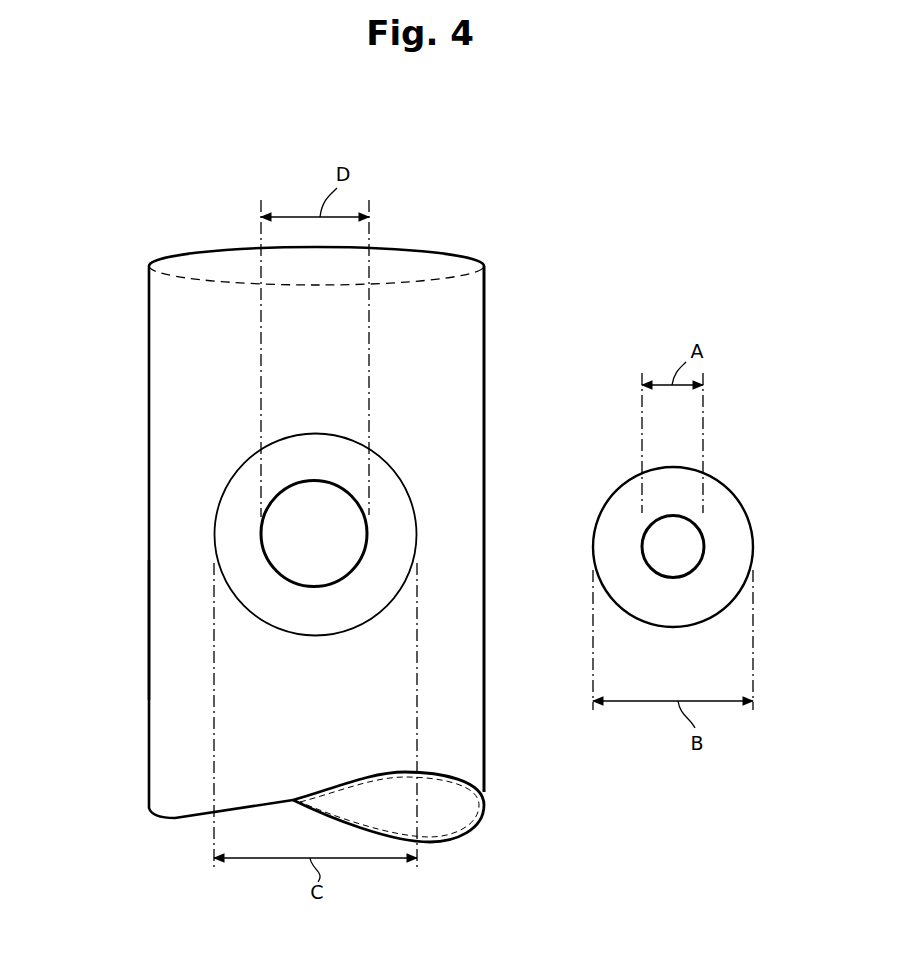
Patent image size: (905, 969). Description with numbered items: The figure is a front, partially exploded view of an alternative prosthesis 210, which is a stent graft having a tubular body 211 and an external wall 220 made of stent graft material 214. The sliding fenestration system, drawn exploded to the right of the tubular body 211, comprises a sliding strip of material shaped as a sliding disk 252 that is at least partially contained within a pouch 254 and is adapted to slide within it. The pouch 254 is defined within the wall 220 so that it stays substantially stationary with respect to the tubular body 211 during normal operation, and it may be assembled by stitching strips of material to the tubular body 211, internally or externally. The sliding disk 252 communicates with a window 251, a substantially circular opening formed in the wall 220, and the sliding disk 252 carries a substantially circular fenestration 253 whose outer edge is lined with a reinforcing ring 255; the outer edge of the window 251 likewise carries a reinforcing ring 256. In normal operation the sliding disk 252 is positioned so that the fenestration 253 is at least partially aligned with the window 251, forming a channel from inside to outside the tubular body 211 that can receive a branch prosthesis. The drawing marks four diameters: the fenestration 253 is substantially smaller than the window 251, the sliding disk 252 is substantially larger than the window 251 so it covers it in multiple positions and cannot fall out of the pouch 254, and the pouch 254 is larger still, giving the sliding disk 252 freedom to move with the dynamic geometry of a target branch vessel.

The prosthesis 210 is at (302, 526).
The tubular body 211 is at (484, 358).
The stent graft material 214 is at (155, 642).
The external wall 220 is at (157, 730).
The window 251 is at (352, 543).
The sliding disk 252 is at (740, 495).
The fenestration 253 is at (704, 548).
The pouch 254 is at (218, 487).
The reinforcing ring 255 is at (632, 542).
The reinforcing ring 256 is at (357, 500).